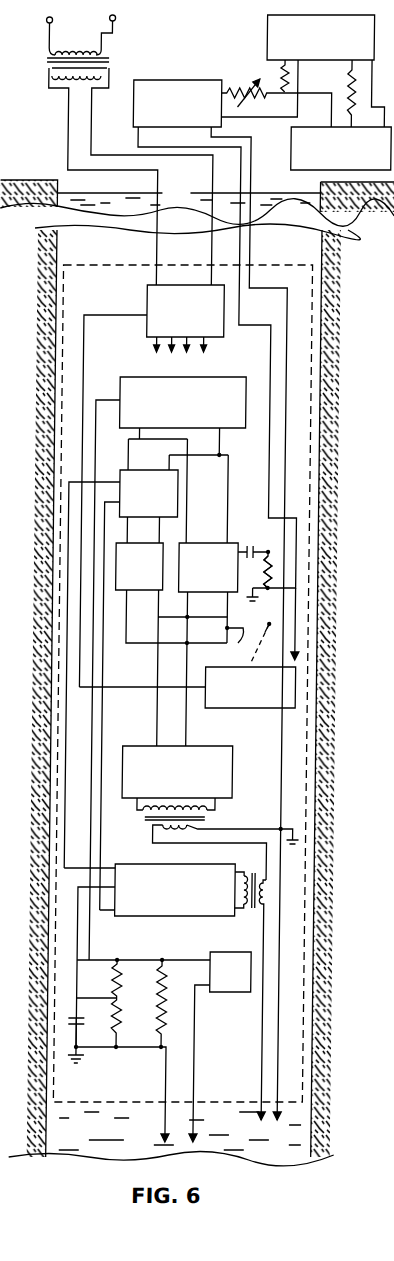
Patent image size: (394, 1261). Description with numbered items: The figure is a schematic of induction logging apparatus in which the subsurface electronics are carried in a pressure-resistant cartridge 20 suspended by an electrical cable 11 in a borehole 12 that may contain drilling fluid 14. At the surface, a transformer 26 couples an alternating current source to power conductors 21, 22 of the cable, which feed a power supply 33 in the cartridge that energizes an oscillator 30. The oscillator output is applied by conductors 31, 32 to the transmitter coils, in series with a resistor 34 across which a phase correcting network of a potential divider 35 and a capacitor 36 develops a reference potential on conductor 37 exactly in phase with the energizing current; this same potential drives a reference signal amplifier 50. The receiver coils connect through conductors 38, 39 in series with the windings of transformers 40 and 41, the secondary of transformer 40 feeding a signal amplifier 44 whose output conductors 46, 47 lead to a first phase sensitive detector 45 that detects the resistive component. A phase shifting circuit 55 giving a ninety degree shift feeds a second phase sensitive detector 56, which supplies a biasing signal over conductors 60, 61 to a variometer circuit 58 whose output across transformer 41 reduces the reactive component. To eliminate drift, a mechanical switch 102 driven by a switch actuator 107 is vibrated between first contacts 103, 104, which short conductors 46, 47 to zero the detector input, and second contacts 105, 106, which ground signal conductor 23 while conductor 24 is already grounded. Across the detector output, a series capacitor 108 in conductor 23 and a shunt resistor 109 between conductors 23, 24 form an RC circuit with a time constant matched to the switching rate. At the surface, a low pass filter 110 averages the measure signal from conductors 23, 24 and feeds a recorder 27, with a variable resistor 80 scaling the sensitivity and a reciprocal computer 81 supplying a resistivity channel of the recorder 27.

The transformer 26 is at (114, 63).
The low pass filter 110 is at (162, 80).
The variable resistor 80 is at (241, 86).
The recorder 27 is at (265, 22).
The reciprocal computer 81 is at (290, 152).
The power conductor 21 is at (158, 206).
The electrical cable 11 is at (145, 245).
The power conductor 22 is at (212, 240).
The signal conductor 24 is at (250, 253).
The signal conductor 23 is at (272, 341).
The pressure-resistant cartridge 20 is at (46, 299).
The power supply 33 is at (148, 297).
The reference signal amplifier 50 is at (192, 377).
The second phase sensitive detector 56 is at (123, 470).
The phase shifting circuit 55 is at (148, 590).
The first phase sensitive detector 45 is at (208, 543).
The series capacitor 108 is at (257, 546).
The shunt resistor 109 is at (278, 572).
The second contact 106 is at (256, 604).
The first contact 103 is at (248, 618).
The first contact 104 is at (238, 646).
The second contact 105 is at (278, 620).
The mechanical switch 102 is at (274, 624).
The switch actuator 107 is at (247, 708).
The conductor 46 is at (163, 680).
The conductor 47 is at (192, 706).
The signal amplifier 44 is at (244, 750).
The transformer 40 is at (220, 818).
The variometer circuit 58 is at (152, 864).
The transformer 41 is at (262, 875).
The conductor 60 is at (72, 781).
The conductor 61 is at (100, 855).
The conductor 37 is at (86, 950).
The oscillator 30 is at (222, 952).
The conductor 38 is at (272, 918).
The conductor 39 is at (288, 952).
The potential divider 35 is at (124, 983).
The resistor 34 is at (162, 1003).
The capacitor 36 is at (88, 1027).
The conductor 31 is at (176, 1078).
The conductor 32 is at (204, 1052).
The borehole 12 is at (60, 1142).
The drilling fluid 14 is at (146, 1140).